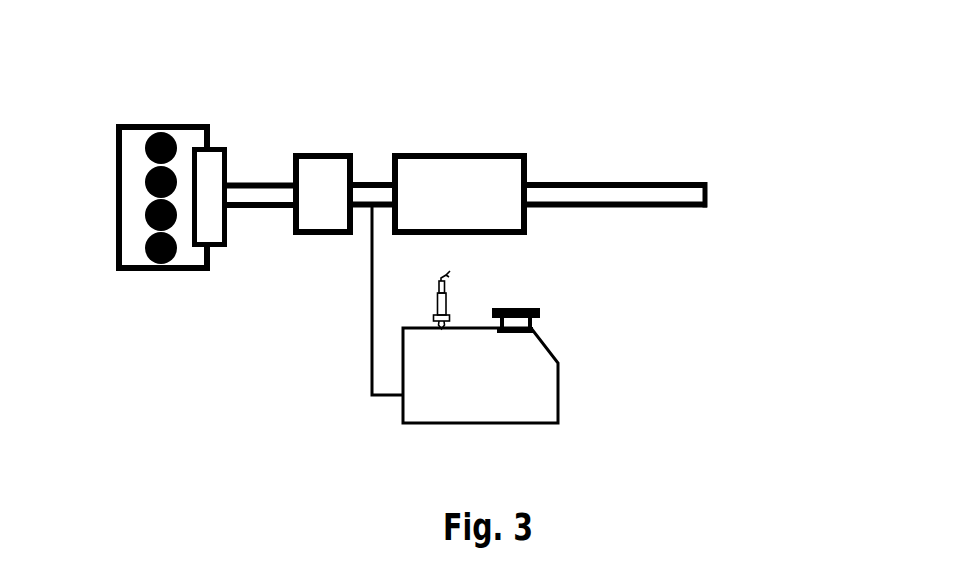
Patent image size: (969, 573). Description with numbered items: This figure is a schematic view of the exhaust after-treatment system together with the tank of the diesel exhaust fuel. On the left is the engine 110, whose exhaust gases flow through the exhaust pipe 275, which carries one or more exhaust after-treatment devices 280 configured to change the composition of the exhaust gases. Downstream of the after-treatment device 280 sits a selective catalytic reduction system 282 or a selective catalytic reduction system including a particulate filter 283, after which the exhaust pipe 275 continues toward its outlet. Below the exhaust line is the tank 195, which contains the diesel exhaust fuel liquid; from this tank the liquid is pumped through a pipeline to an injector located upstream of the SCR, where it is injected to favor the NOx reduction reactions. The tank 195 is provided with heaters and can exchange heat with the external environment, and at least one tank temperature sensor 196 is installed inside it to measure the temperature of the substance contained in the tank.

The engine 110 is at (148, 227).
The exhaust after-treatment device 280 is at (323, 183).
The selective catalytic reduction system 282 is at (584, 130).
The selective catalytic reduction system including a particulate filter 283 is at (480, 178).
The exhaust pipe 275 is at (708, 195).
The tank 195 is at (540, 384).
The tank temperature sensor 196 is at (437, 308).